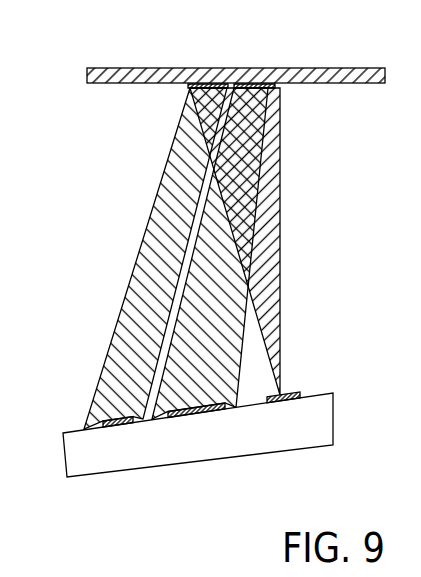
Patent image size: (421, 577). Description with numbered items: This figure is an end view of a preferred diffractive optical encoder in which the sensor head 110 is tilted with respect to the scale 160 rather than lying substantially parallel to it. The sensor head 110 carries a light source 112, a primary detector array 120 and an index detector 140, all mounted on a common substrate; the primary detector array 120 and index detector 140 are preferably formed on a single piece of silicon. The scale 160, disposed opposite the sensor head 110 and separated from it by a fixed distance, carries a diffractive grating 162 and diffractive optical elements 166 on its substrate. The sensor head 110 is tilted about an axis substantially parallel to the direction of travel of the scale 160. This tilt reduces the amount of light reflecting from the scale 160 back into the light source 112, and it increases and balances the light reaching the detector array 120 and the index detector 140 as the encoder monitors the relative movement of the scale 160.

The sensor head 110 is at (58, 460).
The light source 112 is at (288, 403).
The primary detector array 120 is at (195, 420).
The index detector 140 is at (107, 427).
The scale 160 is at (81, 64).
The diffractive grating 162 is at (247, 83).
The diffractive optical element 166 is at (205, 83).